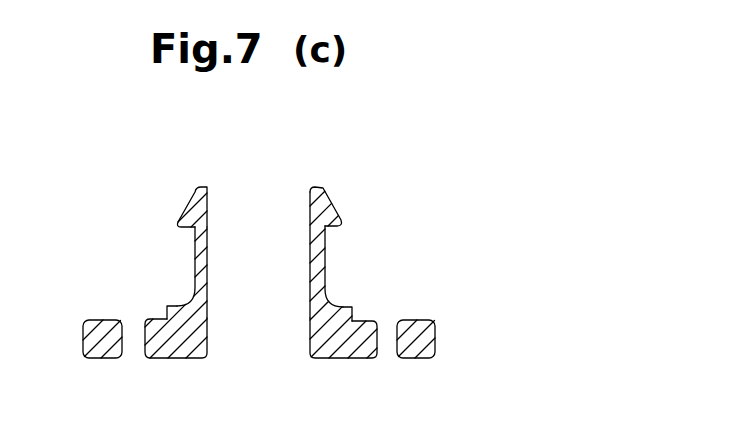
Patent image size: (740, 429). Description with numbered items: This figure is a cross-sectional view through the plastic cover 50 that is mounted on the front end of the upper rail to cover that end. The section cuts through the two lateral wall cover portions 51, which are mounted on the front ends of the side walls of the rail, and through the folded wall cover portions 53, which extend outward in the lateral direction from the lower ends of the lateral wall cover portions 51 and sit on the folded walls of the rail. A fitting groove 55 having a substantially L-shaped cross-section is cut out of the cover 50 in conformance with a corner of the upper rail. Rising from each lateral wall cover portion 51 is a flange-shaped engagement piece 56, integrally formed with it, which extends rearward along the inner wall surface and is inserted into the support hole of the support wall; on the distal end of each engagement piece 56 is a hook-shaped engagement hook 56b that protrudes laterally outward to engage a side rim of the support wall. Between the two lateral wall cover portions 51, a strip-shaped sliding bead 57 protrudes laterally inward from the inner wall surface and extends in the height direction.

The cover 50 is at (405, 125).
The lateral wall cover portion 51 is at (177, 358).
The folded wall cover portion 53 is at (90, 358).
The fitting groove 55 is at (163, 312).
The engagement piece 56 is at (193, 256).
The engagement hook 56b is at (192, 204).
The sliding bead 57 is at (310, 320).